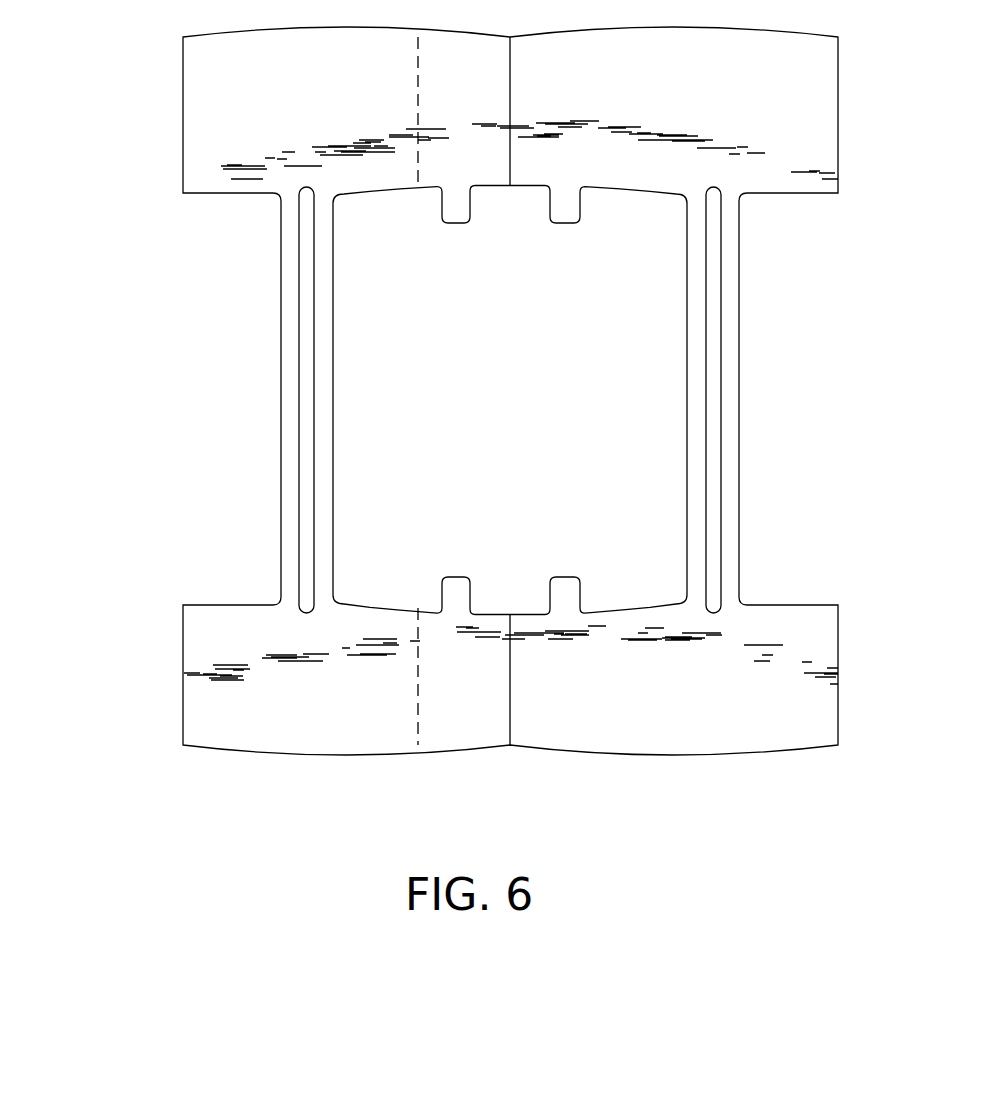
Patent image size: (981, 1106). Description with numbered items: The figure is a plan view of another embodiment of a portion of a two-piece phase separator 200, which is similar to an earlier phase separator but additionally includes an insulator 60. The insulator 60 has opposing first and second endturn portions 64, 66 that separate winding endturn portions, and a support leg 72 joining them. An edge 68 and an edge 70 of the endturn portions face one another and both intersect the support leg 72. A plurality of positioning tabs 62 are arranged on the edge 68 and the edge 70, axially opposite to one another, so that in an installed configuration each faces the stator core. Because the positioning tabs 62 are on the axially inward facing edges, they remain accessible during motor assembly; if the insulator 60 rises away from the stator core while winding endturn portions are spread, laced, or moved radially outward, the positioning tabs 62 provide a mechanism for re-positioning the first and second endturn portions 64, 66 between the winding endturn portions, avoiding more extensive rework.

The phase separator 200 is at (645, 786).
The insulator 60 is at (138, 783).
The second endturn portion 66 is at (354, 108).
The first endturn portion 64 is at (349, 690).
The support leg 72 is at (288, 350).
The edge 70 is at (387, 188).
The edge 68 is at (373, 610).
The positioning tabs 62 is at (458, 210).